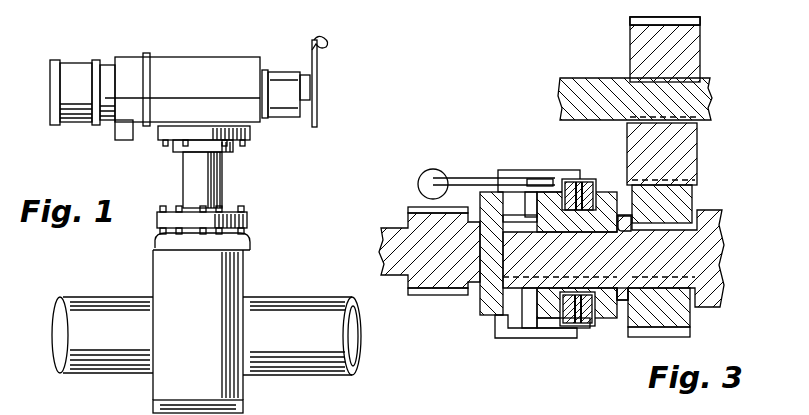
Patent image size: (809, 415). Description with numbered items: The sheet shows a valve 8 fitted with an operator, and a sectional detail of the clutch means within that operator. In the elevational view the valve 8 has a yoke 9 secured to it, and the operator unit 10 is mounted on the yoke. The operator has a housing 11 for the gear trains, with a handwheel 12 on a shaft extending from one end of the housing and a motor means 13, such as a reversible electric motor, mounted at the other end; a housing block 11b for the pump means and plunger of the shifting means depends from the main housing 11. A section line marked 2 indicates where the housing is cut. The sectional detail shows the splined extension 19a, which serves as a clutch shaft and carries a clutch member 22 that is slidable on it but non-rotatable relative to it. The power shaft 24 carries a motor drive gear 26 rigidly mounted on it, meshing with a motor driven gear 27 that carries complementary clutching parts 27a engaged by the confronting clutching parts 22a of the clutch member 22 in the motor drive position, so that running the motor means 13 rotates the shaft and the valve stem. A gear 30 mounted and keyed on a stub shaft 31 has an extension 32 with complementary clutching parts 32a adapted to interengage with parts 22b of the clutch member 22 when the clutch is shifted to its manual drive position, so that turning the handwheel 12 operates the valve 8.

In FIG. 1, the section line 2- 2 is at (256, 88).
In FIG. 1, the valve 8 is at (251, 284).
In FIG. 1, the yoke 9 is at (222, 176).
In FIG. 1, the operator unit 10 is at (265, 127).
In FIG. 1, the housing 11 is at (214, 66).
In FIG. 1, the housing block 11b is at (118, 135).
In FIG. 1, the handwheel 12 is at (318, 62).
In FIG. 1, the motor means 13 is at (72, 68).
In FIG. 3, the splined extension 19a is at (541, 280).
In FIG. 3, the clutch member 22 is at (603, 320).
In FIG. 3, the clutching parts 22a is at (623, 213).
In FIG. 3, the clutching parts 22b is at (533, 196).
In FIG. 3, the power shaft 24 is at (580, 80).
In FIG. 3, the motor drive gear 26 is at (700, 149).
In FIG. 3, the motor driven gear 27 is at (688, 320).
In FIG. 3, the complementary clutching parts 27a is at (622, 304).
In FIG. 3, the gear 30 is at (432, 292).
In FIG. 3, the stub shaft 31 is at (383, 250).
In FIG. 3, the extension 32 is at (484, 314).
In FIG. 3, the complementary clutching parts 32a is at (508, 336).